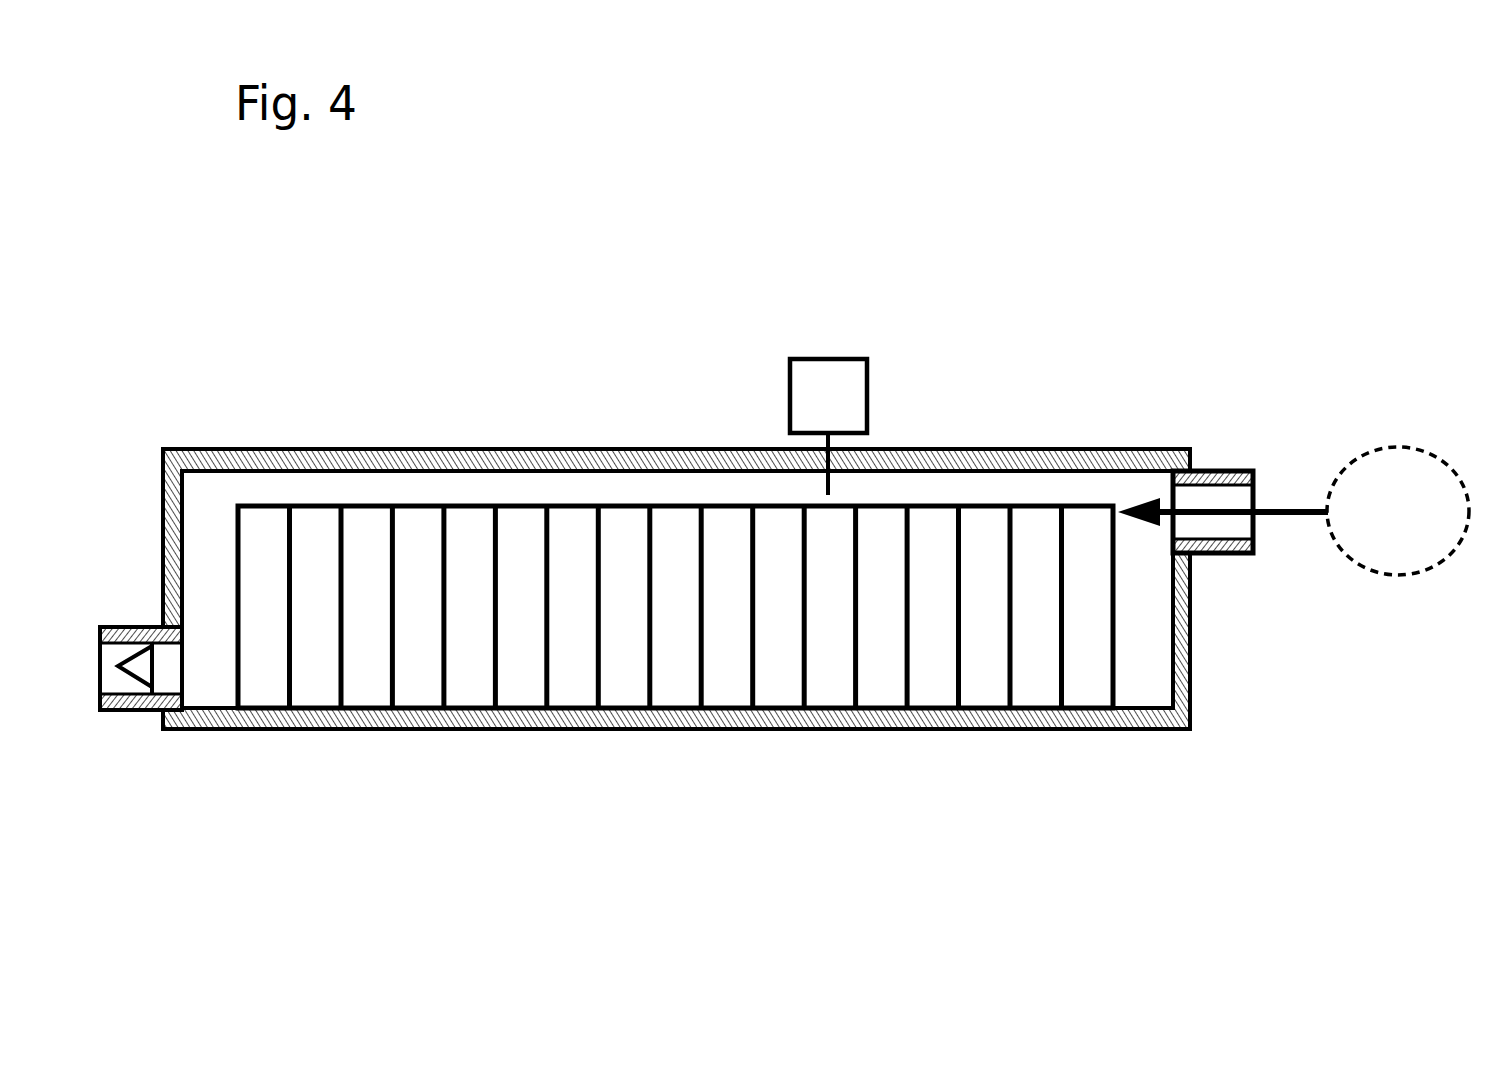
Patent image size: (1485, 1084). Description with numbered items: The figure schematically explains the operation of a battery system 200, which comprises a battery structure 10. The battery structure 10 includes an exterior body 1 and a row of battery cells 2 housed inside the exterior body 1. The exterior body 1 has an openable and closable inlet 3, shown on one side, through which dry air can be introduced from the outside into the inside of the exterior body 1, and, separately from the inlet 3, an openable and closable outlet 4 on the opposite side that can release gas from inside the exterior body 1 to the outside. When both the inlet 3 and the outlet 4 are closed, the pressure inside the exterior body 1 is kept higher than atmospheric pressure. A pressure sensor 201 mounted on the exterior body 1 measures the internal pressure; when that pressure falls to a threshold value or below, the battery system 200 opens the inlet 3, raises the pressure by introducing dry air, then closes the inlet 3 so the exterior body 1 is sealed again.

The battery system 200 is at (708, 202).
The pressure sensor 201 is at (833, 372).
The battery structure 10 is at (272, 393).
The exterior body 1 is at (1037, 450).
The battery cell 2 is at (1033, 688).
The inlet 3 is at (1207, 470).
The outlet 4 is at (122, 710).